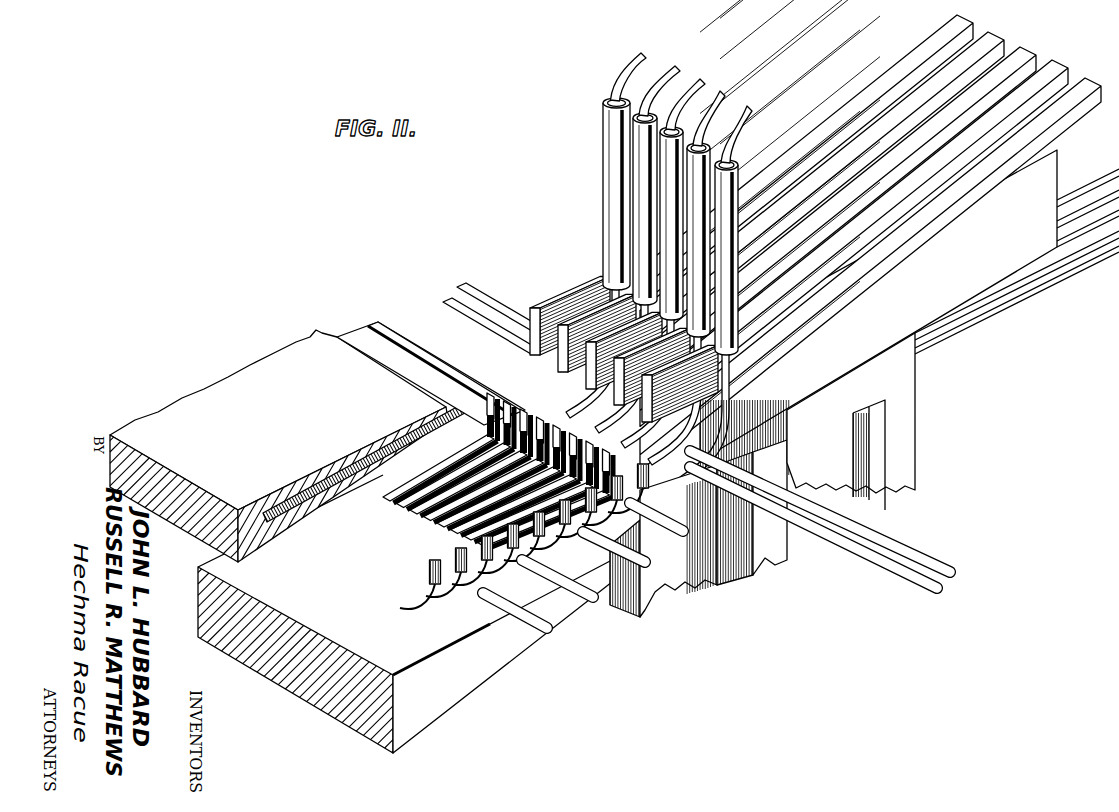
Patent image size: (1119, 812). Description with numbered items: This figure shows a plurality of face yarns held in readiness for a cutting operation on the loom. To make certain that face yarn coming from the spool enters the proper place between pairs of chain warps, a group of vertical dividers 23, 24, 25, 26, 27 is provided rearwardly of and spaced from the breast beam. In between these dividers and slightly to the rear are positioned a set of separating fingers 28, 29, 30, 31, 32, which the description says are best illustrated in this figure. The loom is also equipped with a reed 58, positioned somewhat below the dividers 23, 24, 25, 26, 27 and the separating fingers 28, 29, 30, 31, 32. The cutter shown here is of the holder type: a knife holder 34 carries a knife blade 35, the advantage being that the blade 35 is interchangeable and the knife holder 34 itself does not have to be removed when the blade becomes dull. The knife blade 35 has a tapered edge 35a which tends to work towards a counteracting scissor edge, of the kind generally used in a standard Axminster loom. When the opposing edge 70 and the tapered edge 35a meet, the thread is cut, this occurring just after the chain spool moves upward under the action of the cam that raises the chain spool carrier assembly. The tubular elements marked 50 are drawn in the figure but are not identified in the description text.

The vertical divider 23 is at (556, 297).
The vertical divider 24 is at (612, 300).
The vertical divider 25 is at (635, 323).
The vertical divider 26 is at (664, 337).
The vertical divider 27 is at (690, 353).
The separating finger 28 is at (960, 26).
The separating finger 29 is at (990, 38).
The separating finger 30 is at (1023, 54).
The separating finger 31 is at (1054, 66).
The separating finger 32 is at (1089, 82).
The knife holder 34 is at (242, 380).
The knife blade 35 is at (357, 335).
The tapered edge 35a is at (400, 333).
The insulating sleeves 50 is at (606, 160).
The reed 58 is at (906, 414).
The edge 70 is at (731, 372).